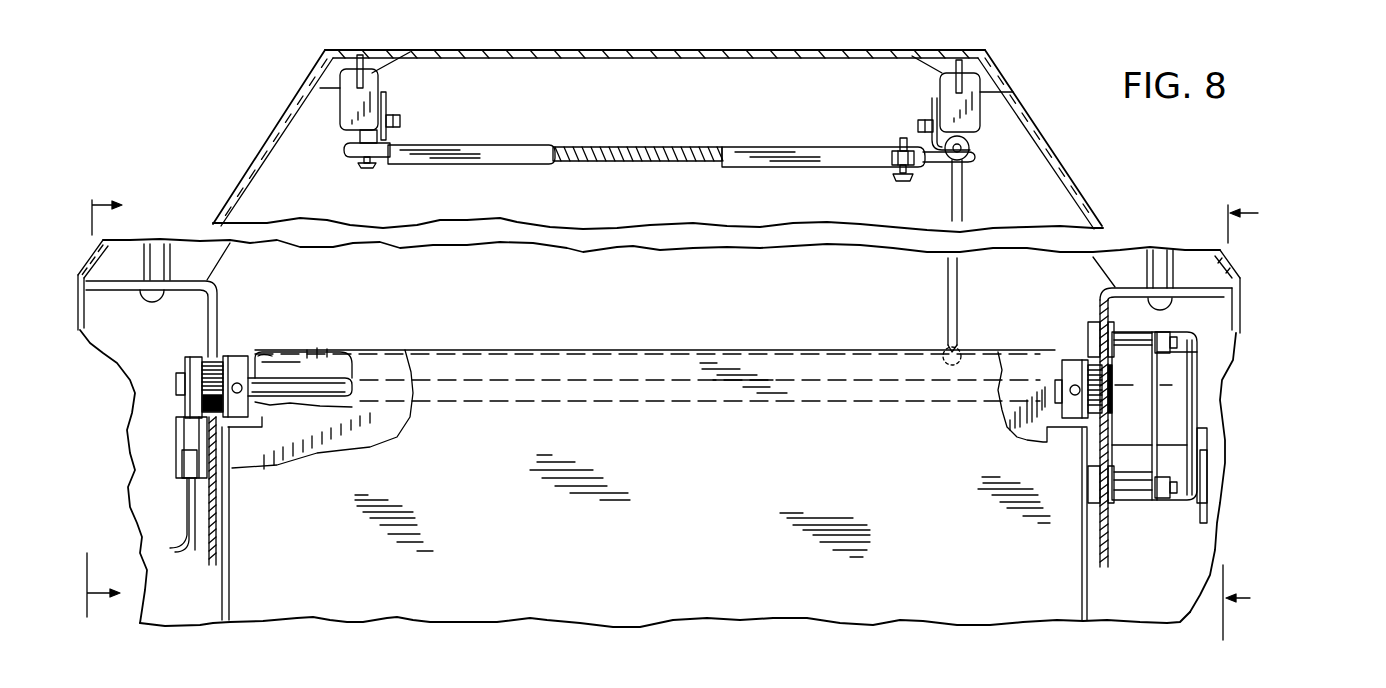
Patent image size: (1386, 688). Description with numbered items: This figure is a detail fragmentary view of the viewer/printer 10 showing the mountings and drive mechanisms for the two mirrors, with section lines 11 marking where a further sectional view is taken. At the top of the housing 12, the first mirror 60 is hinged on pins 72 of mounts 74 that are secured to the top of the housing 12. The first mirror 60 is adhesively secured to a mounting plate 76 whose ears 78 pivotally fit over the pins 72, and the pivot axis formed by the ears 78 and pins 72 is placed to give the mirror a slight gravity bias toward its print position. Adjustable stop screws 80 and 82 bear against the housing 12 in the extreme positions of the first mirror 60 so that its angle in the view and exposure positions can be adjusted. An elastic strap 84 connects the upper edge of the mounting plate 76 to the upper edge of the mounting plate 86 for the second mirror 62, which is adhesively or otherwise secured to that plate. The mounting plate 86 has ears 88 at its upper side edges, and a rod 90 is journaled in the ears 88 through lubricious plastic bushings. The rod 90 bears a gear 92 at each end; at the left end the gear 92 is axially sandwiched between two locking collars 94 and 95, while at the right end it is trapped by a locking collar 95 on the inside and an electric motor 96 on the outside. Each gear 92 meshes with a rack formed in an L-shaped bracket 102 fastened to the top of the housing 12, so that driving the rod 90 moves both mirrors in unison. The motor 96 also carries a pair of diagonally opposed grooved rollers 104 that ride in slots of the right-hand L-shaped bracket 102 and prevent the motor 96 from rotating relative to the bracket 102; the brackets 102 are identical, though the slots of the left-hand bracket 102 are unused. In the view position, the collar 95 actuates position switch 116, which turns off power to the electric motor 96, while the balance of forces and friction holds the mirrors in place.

The viewer/printer 10 is at (1256, 421).
The section line 11 is at (127, 403).
The housing 12 is at (1068, 176).
The first mirror 60 is at (645, 163).
The second mirror 62 is at (491, 480).
The pins 72 is at (400, 121).
The mounts 74 is at (336, 112).
The mounting plate 76 is at (745, 150).
The ears 78 is at (386, 102).
The adjustable stop screw 80 is at (363, 169).
The adjustable stop screw 82 is at (896, 181).
The elastic strap 84 is at (962, 201).
The mounting plate 86 is at (375, 352).
The ears 88 is at (258, 353).
The rod 90 is at (316, 376).
The gear 92 is at (213, 363).
The locking collar 94 is at (240, 357).
The locking collar 95 is at (187, 370).
The electric motor 96 is at (1182, 397).
The L-shaped bracket 102 is at (216, 302).
The grooved rollers 104 is at (1098, 322).
The position switch 116 is at (176, 421).